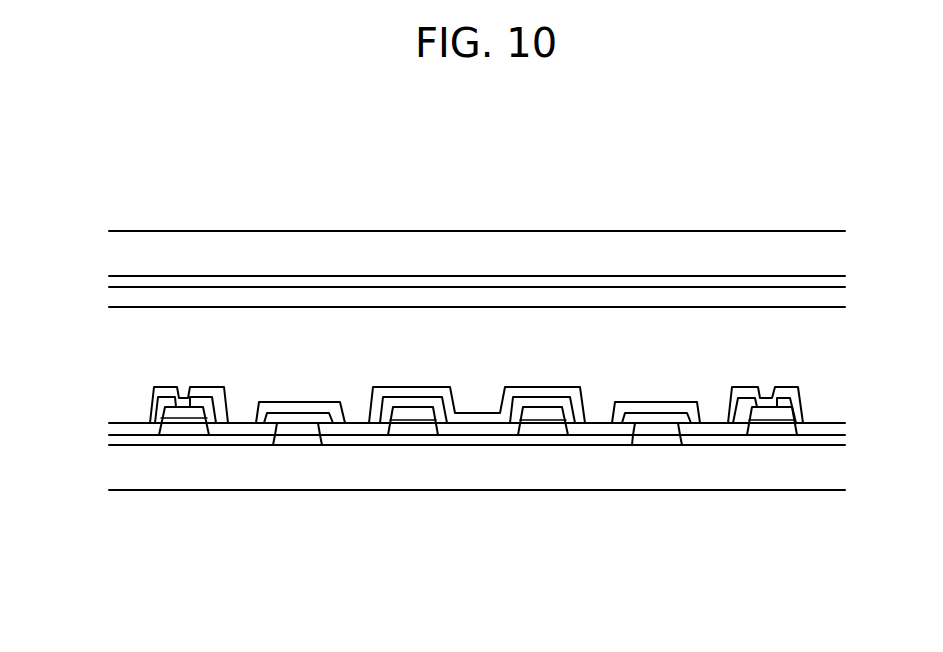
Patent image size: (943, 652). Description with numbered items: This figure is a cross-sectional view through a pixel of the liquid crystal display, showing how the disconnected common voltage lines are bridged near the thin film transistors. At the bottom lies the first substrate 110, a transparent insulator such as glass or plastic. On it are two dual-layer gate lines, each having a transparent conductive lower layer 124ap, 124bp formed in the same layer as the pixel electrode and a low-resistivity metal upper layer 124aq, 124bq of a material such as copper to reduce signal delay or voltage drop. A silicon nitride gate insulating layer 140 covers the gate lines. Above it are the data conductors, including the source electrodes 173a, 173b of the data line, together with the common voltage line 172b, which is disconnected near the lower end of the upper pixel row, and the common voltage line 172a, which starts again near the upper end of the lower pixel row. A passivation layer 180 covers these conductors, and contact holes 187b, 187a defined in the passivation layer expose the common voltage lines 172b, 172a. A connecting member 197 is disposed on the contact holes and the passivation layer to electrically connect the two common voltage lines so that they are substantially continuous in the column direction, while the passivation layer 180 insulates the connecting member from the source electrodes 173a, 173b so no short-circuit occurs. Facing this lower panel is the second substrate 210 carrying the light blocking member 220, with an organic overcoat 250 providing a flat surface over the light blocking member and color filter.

The first substrate 110 is at (815, 472).
The lower layer of gate line 124ap is at (645, 440).
The upper layer of gate line 124aq is at (667, 430).
The lower layer of gate line 124bp is at (287, 440).
The upper layer of gate line 124bq is at (308, 430).
The gate insulating layer 140 is at (720, 438).
The common voltage line 172a is at (773, 413).
The common voltage line 172b is at (185, 410).
The source electrode 173a is at (543, 413).
The source electrode 173b is at (413, 413).
The passivation layer 180 is at (472, 430).
The contact hole 187a is at (767, 398).
The contact hole 187b is at (184, 398).
The connecting member 197 is at (412, 392).
The second substrate 210 is at (595, 252).
The light blocking member 220 is at (484, 282).
The overcoat 250 is at (364, 297).